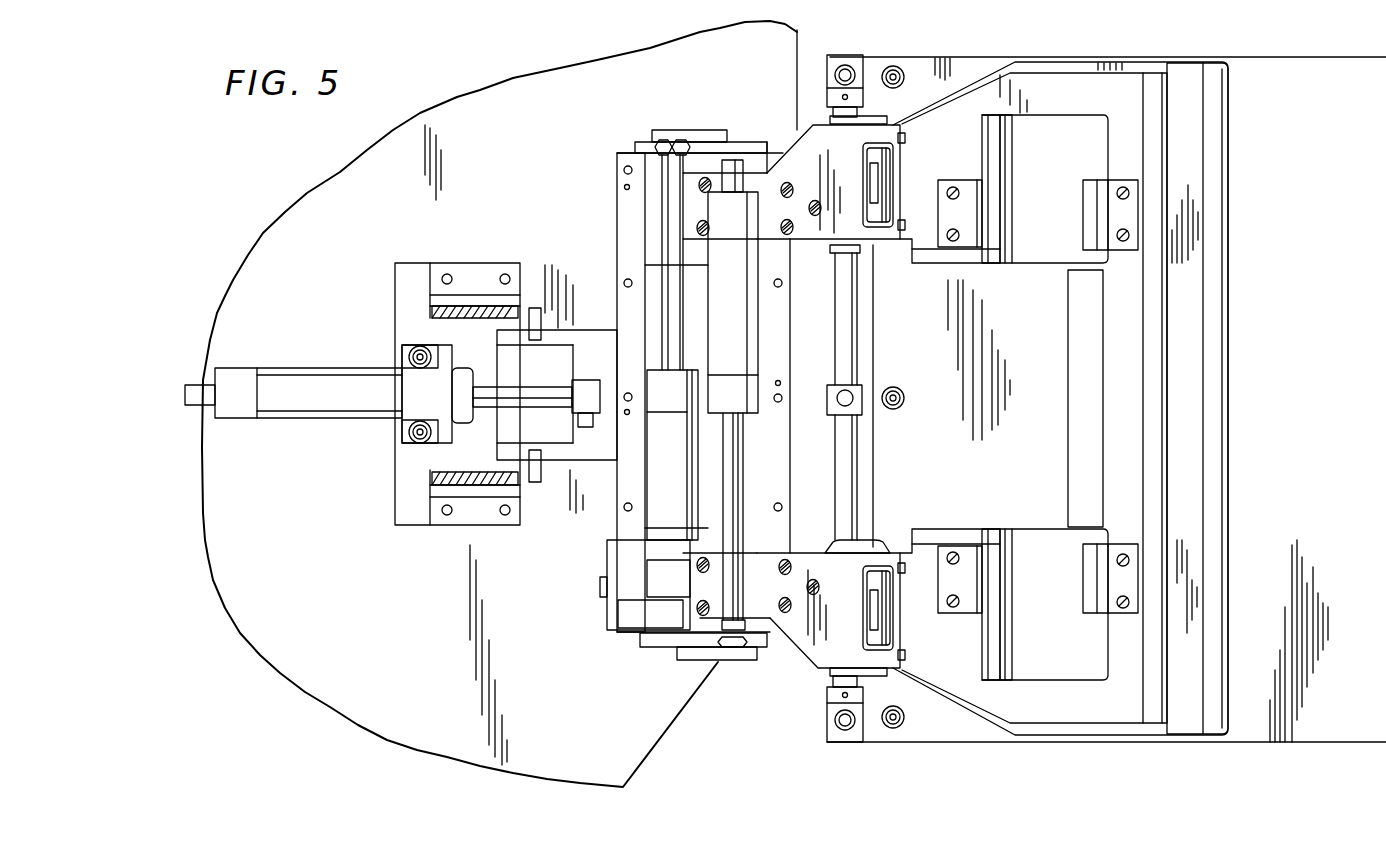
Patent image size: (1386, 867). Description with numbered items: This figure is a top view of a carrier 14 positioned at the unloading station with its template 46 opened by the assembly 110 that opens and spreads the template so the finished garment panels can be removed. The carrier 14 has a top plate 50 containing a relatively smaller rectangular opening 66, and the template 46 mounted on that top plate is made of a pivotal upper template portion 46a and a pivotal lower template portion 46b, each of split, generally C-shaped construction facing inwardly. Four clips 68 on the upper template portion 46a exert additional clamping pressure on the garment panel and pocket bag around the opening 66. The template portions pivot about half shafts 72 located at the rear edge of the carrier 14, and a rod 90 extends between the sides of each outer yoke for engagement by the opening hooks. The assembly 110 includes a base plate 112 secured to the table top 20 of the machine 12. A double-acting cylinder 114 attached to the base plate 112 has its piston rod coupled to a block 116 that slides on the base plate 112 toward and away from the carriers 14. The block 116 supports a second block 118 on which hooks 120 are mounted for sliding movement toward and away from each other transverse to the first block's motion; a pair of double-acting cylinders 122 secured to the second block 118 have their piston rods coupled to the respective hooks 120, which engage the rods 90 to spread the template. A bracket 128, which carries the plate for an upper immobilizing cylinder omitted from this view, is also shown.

The machine 12 is at (808, 44).
The carrier 14 is at (1316, 50).
The table top 20 is at (660, 110).
The template 46 is at (1051, 50).
The upper template portion 46a is at (1153, 80).
The lower template portion 46b is at (1213, 81).
The top plate 50 is at (1356, 110).
The opening 66 is at (1077, 367).
The clips 68 is at (1108, 192).
The half shafts 72 is at (845, 322).
The rod 90 is at (884, 170).
The assembly 110 is at (516, 169).
The base plate 112 is at (415, 268).
The double-acting cylinder 114 is at (353, 400).
The block 116 is at (612, 357).
The second block 118 is at (625, 217).
The hooks 120 is at (807, 167).
The double-acting cylinders 122 is at (730, 308).
The bracket 128 is at (447, 320).